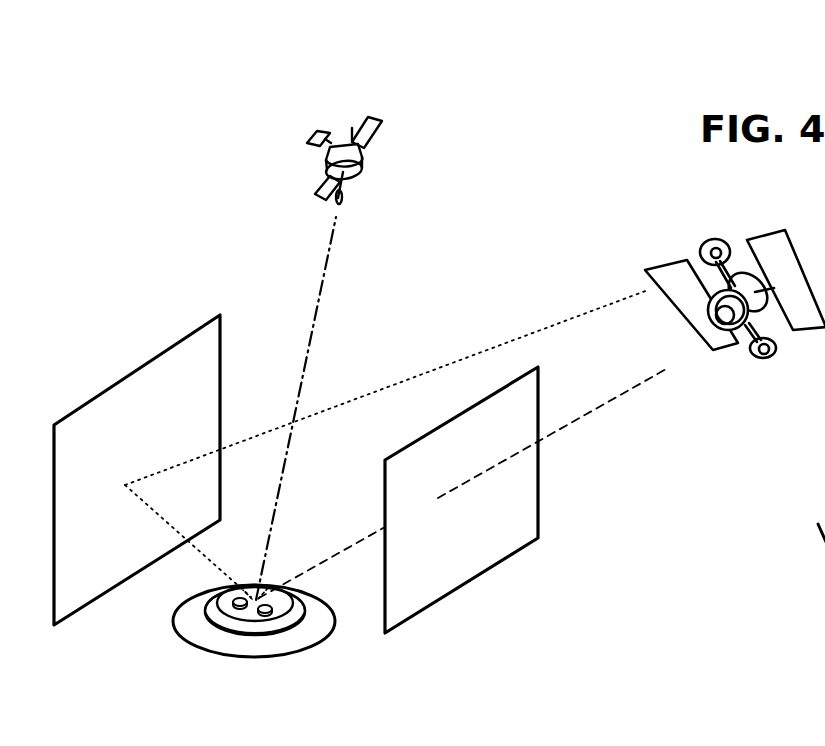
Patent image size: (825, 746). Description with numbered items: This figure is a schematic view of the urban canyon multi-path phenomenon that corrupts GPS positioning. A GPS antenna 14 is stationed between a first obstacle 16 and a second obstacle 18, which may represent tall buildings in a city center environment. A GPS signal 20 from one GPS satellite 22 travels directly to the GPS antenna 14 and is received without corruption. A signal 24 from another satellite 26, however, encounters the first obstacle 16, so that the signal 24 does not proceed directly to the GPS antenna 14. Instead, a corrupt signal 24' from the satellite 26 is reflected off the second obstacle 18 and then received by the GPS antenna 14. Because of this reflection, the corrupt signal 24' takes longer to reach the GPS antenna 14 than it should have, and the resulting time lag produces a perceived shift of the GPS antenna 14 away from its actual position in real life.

The GPS antenna 14 is at (222, 640).
The first obstacle 16 is at (472, 565).
The second obstacle 18 is at (133, 385).
The GPS signal 20 is at (327, 272).
The GPS satellite 22 is at (368, 153).
The signal 24 is at (467, 483).
The corrupt signal 24' is at (386, 436).
The satellite 26 is at (800, 262).